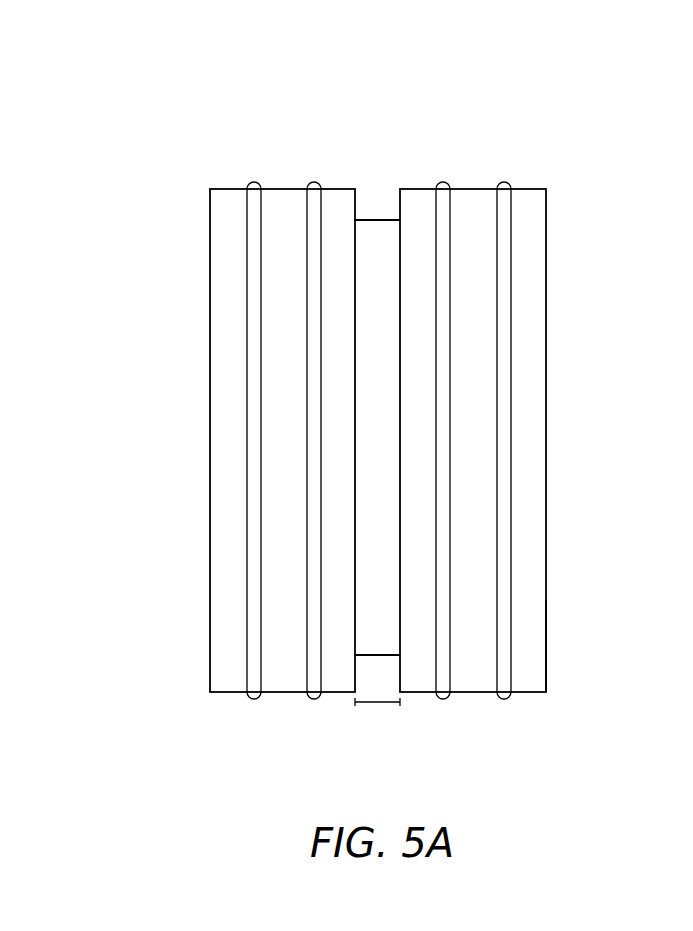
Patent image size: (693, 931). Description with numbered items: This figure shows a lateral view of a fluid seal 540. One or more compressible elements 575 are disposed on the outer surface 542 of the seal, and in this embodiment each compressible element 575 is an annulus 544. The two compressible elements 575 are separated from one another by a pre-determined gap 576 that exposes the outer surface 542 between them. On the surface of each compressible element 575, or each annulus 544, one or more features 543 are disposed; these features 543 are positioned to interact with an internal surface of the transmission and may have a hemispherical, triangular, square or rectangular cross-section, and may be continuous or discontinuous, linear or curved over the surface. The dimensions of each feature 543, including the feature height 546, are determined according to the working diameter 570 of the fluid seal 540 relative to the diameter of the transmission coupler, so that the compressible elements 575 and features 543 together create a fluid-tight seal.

The fluid seal 540 is at (173, 58).
The outer surface 542 is at (378, 220).
The feature 543 is at (250, 181).
The annulus 544 is at (525, 453).
The feature height 546 is at (508, 182).
The working diameter 570 is at (530, 692).
The compressible element 575 is at (246, 448).
The pre-determined gap 576 is at (378, 710).